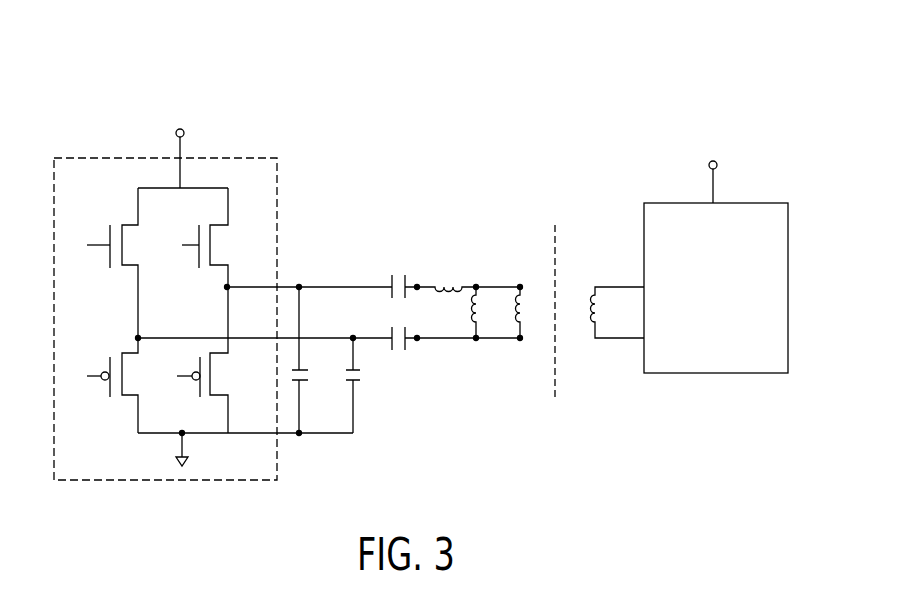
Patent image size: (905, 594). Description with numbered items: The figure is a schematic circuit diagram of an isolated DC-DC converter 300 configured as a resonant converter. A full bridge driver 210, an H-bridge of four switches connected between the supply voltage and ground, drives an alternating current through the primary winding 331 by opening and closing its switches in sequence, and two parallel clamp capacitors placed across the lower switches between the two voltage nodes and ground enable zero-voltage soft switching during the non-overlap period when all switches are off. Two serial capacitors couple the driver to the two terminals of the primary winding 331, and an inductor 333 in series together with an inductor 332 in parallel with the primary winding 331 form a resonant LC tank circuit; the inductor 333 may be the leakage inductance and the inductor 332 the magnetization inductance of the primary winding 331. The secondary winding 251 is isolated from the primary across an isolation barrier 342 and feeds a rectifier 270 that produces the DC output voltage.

The isolated DC-DC converter 300 is at (584, 108).
The full bridge driver 210 is at (175, 481).
The inductor 333 is at (452, 283).
The inductor 332 is at (478, 325).
The primary winding 331 is at (522, 325).
The isolation barrier 342 is at (560, 242).
The secondary winding 251 is at (594, 325).
The rectifier 270 is at (690, 373).